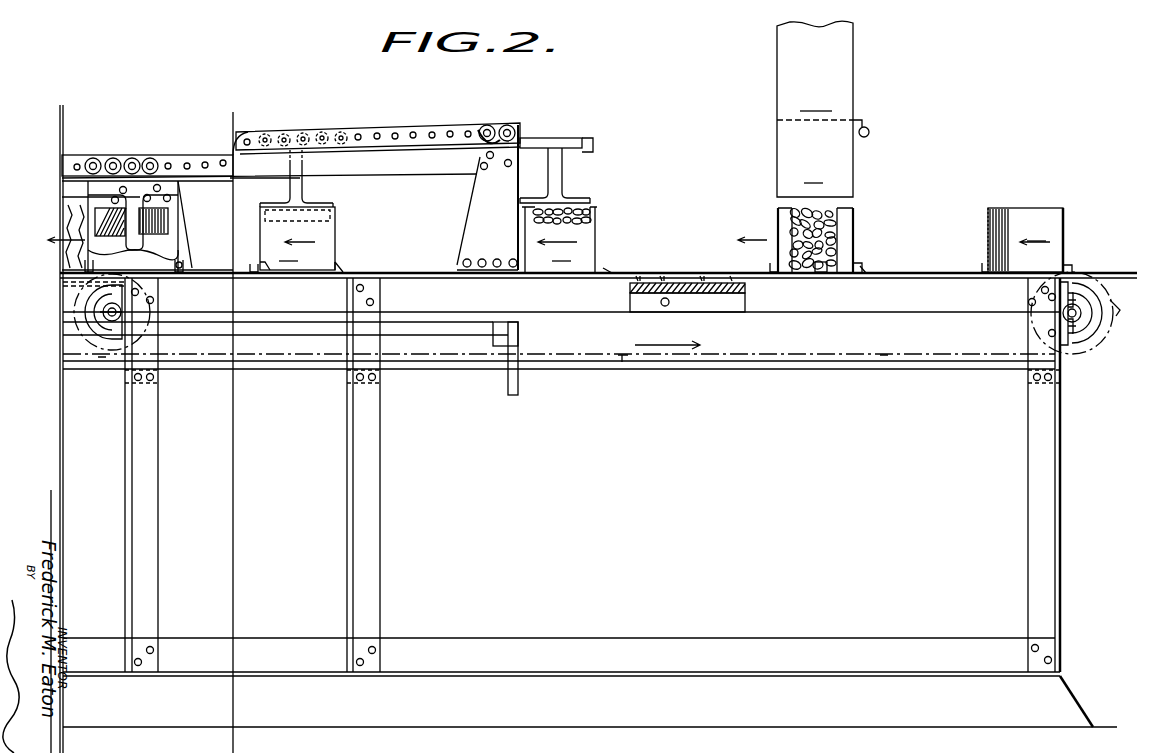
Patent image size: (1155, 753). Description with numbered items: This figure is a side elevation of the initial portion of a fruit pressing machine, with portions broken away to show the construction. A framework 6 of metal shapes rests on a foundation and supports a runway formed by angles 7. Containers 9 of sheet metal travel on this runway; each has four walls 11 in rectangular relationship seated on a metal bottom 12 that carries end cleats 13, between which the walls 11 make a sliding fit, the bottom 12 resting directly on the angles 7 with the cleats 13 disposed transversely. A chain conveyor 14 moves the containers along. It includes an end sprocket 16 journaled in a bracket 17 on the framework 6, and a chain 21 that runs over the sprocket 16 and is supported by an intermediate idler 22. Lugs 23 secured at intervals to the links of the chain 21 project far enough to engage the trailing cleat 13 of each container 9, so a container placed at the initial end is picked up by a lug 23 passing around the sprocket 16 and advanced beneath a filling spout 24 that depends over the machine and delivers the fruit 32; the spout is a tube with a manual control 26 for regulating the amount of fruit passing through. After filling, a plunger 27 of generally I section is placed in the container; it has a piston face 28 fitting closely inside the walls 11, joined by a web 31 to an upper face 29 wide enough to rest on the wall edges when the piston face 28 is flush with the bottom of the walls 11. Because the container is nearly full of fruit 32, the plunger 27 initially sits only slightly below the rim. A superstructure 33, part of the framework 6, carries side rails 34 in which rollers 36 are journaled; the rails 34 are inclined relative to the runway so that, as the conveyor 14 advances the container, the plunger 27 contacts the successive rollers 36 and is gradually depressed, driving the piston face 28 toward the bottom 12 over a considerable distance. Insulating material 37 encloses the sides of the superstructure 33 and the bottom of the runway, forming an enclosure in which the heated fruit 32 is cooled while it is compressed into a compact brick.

The framework 6 is at (143, 593).
The angles 7 is at (697, 282).
The container 9 is at (172, 223).
The walls 11 is at (810, 208).
The bottom 12 is at (318, 262).
The end cleats 13 is at (255, 264).
The chain conveyor 14 is at (1057, 350).
The end sprocket 16 is at (1115, 300).
The bracket 17 is at (1072, 333).
The chain 21 is at (655, 272).
The intermediate idler 22 is at (115, 348).
The lugs 23 is at (98, 357).
The filling spout 24 is at (815, 109).
The manual control 26 is at (867, 128).
The plunger 27 is at (160, 158).
The piston face 28 is at (160, 237).
The upper face 29 is at (130, 158).
The web 31 is at (133, 197).
The fruit 32 is at (140, 246).
The superstructure 33 is at (248, 130).
The side rails 34 is at (190, 152).
The rollers 36 is at (112, 158).
The insulating material 37 is at (70, 226).